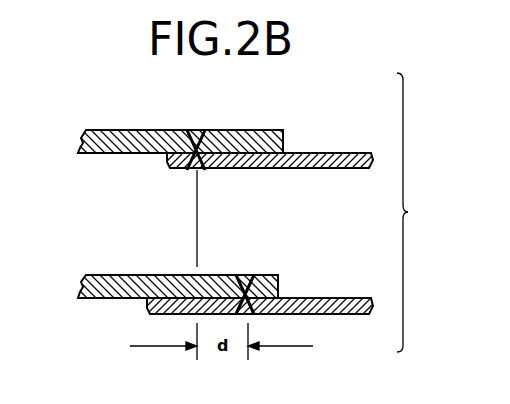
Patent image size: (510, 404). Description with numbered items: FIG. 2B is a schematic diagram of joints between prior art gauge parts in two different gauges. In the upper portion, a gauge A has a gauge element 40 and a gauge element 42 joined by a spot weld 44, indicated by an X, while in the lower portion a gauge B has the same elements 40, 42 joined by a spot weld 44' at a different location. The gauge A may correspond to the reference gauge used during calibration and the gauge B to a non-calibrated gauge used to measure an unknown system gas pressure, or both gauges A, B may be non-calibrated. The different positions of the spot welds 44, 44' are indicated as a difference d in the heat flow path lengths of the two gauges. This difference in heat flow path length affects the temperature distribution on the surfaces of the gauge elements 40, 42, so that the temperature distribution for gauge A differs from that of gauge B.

The gauge element 40 is at (110, 130).
The gauge element 42 is at (323, 168).
The spot weld 44 is at (218, 131).
The spot weld 44' is at (272, 277).
The gauge A is at (290, 121).
The gauge B is at (297, 283).